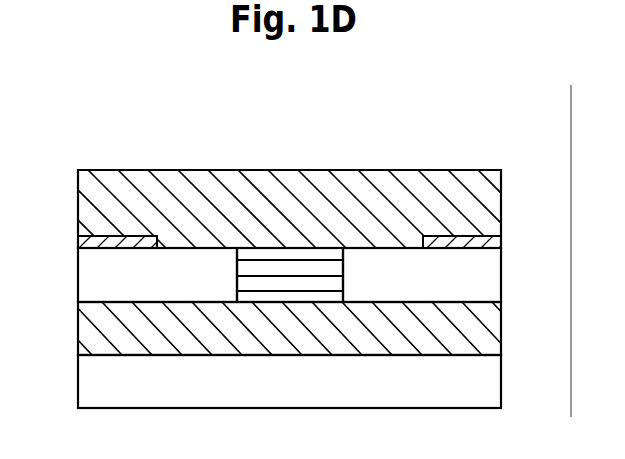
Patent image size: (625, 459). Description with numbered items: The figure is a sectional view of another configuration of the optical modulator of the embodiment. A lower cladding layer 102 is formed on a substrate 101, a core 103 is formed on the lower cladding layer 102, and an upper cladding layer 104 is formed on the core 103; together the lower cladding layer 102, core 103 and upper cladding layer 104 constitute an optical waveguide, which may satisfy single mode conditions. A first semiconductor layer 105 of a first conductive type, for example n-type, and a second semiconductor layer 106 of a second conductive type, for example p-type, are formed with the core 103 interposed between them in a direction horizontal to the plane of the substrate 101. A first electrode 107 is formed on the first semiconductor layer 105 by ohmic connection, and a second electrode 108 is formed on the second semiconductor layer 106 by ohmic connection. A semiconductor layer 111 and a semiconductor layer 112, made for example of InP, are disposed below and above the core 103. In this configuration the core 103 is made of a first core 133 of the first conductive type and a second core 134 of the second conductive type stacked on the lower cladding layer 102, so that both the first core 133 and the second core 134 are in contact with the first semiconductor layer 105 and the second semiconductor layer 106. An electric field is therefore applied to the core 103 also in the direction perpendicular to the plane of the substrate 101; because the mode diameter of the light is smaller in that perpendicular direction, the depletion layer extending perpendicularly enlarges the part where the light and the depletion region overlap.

The substrate 101 is at (502, 382).
The lower cladding layer 102 is at (502, 328).
The core 103 is at (347, 138).
The upper cladding layer 104 is at (502, 203).
The first semiconductor layer 105 is at (77, 275).
The second semiconductor layer 106 is at (502, 277).
The first electrode 107 is at (77, 240).
The second electrode 108 is at (502, 242).
The semiconductor layer 111 is at (243, 294).
The semiconductor layer 112 is at (330, 257).
The first core 133 is at (280, 268).
The second core 134 is at (300, 283).